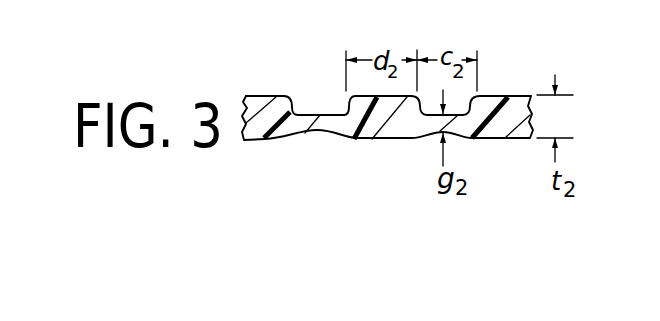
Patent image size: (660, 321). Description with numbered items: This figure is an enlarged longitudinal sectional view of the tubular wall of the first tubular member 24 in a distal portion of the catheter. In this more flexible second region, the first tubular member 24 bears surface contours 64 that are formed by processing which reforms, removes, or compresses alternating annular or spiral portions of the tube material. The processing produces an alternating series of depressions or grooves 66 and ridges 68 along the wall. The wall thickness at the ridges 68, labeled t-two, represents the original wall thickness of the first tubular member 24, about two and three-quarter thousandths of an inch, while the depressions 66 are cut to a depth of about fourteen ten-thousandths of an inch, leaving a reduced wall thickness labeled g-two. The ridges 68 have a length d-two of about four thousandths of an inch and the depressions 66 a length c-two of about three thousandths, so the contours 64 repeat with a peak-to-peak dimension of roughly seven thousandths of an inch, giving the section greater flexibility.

The surface contours 64 is at (504, 54).
The ridges 68 is at (262, 95).
The depressions or grooves 66 is at (308, 115).
The first tubular member 24 is at (519, 95).